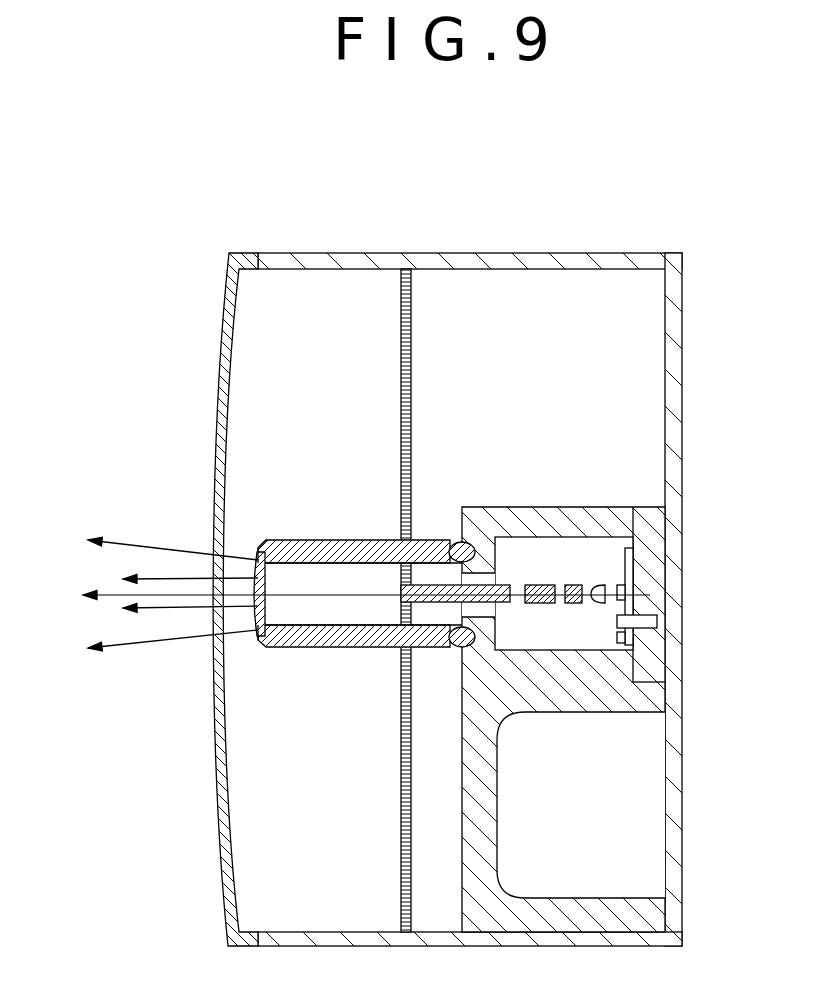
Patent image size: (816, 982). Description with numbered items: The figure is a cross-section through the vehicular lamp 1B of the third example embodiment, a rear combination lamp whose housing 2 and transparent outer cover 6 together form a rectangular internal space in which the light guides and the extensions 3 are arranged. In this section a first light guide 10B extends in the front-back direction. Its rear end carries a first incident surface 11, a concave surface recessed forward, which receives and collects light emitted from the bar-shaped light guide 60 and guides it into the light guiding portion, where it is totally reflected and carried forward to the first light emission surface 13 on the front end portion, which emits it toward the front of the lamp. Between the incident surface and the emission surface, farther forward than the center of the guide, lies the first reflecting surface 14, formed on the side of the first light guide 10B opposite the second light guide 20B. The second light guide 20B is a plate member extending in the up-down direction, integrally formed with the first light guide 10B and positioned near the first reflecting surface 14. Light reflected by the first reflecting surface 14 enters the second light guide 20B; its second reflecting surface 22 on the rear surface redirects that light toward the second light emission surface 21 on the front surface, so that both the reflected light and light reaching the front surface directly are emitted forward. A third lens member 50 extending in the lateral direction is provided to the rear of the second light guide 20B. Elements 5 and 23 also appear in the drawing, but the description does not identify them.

The vehicular lamp 1B is at (312, 230).
The housing 2 is at (568, 262).
The extension 3 is at (400, 367).
The light source board 5 is at (633, 590).
The outer cover 6 is at (221, 372).
The first light guide 10B is at (360, 532).
The first incident surface 11 is at (458, 541).
The first light emission surface 13 is at (261, 541).
The first reflecting surface 14 is at (264, 551).
The second light guide 20B is at (246, 566).
The second light emission surface 21 is at (318, 540).
The second reflecting surface 22 is at (255, 616).
The aperture rod 23 is at (403, 613).
The third lens member 50 is at (577, 576).
The bar-shaped light guide 60 is at (476, 552).